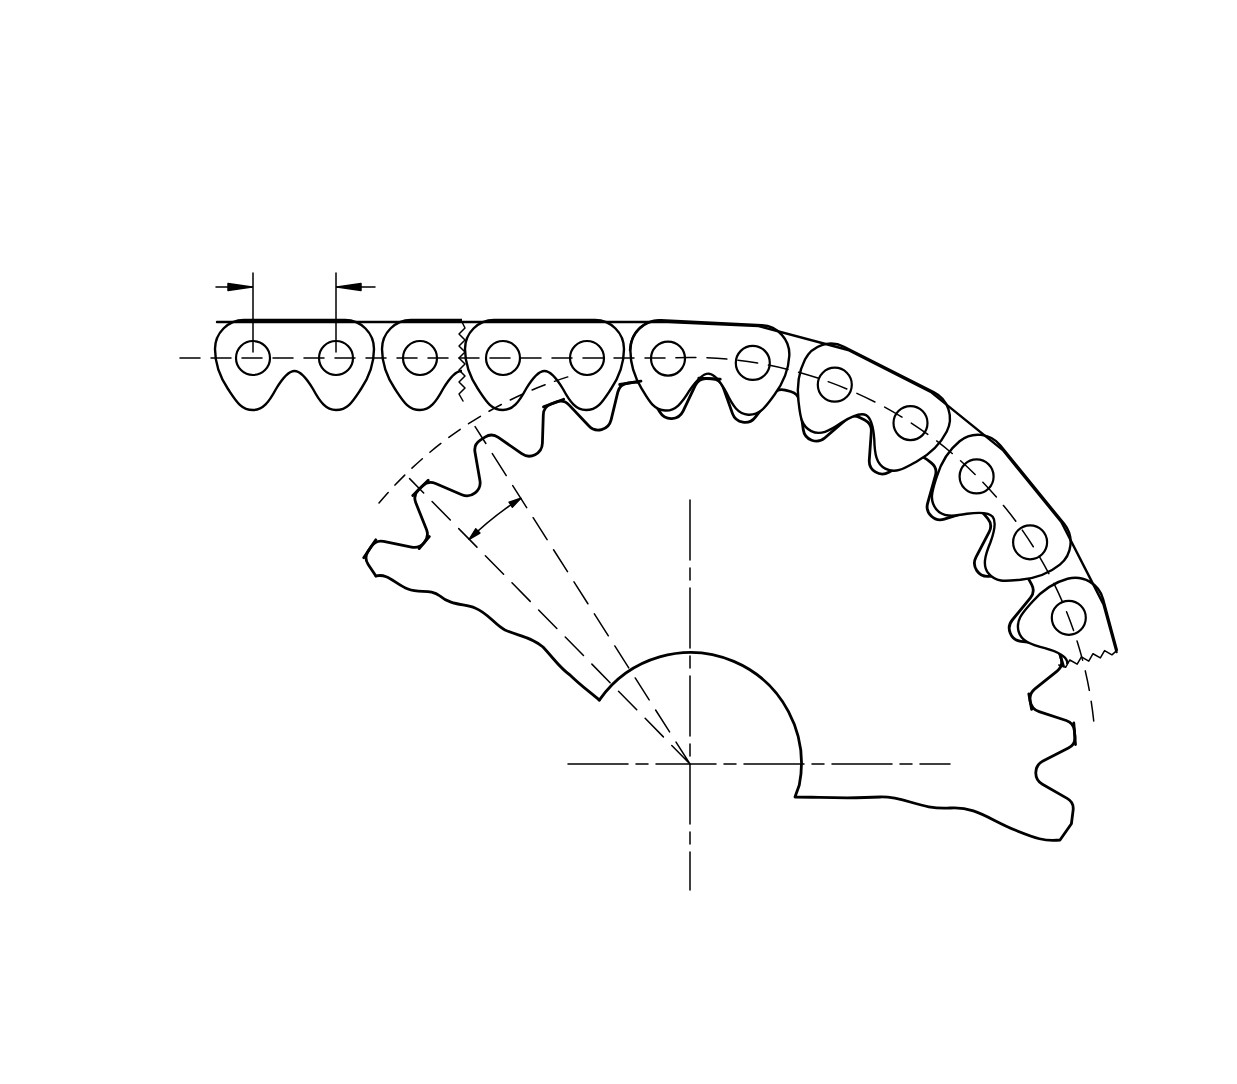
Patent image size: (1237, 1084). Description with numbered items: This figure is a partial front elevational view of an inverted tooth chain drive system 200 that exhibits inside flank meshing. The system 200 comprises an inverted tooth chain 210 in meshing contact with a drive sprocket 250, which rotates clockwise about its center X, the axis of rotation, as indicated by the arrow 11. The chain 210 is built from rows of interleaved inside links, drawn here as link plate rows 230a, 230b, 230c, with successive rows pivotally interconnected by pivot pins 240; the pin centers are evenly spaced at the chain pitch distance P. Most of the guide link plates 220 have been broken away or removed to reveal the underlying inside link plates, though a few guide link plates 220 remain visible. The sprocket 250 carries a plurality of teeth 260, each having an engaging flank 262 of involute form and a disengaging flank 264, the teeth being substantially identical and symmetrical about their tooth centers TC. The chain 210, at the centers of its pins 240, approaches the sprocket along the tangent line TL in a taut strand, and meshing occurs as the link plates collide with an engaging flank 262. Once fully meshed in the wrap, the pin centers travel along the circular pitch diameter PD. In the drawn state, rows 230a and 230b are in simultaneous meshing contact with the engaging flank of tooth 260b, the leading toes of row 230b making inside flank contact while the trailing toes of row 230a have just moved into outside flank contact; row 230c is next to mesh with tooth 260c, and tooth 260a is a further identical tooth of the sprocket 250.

The inverted tooth chain drive system 200 is at (1075, 240).
The inverted tooth chain 210 is at (673, 427).
The guide link plates 220 is at (302, 392).
The link plate row 230a is at (723, 335).
The link plate row 230b is at (633, 330).
The link plate row 230c is at (540, 335).
The pivot pins 240 is at (912, 412).
The drive sprocket 250 is at (522, 617).
The teeth 260 is at (392, 567).
The sprocket tooth 260a is at (713, 410).
The sprocket tooth 260b is at (640, 408).
The sprocket tooth 260c is at (567, 428).
The engaging flank 262 is at (410, 522).
The disengaging flank 264 is at (426, 512).
The arrow 11 is at (1133, 400).
The chain pitch distance P is at (295, 312).
The tangent line TL is at (205, 362).
The tooth center TC is at (412, 487).
The pitch diameter PD is at (1093, 696).
The center X is at (692, 767).